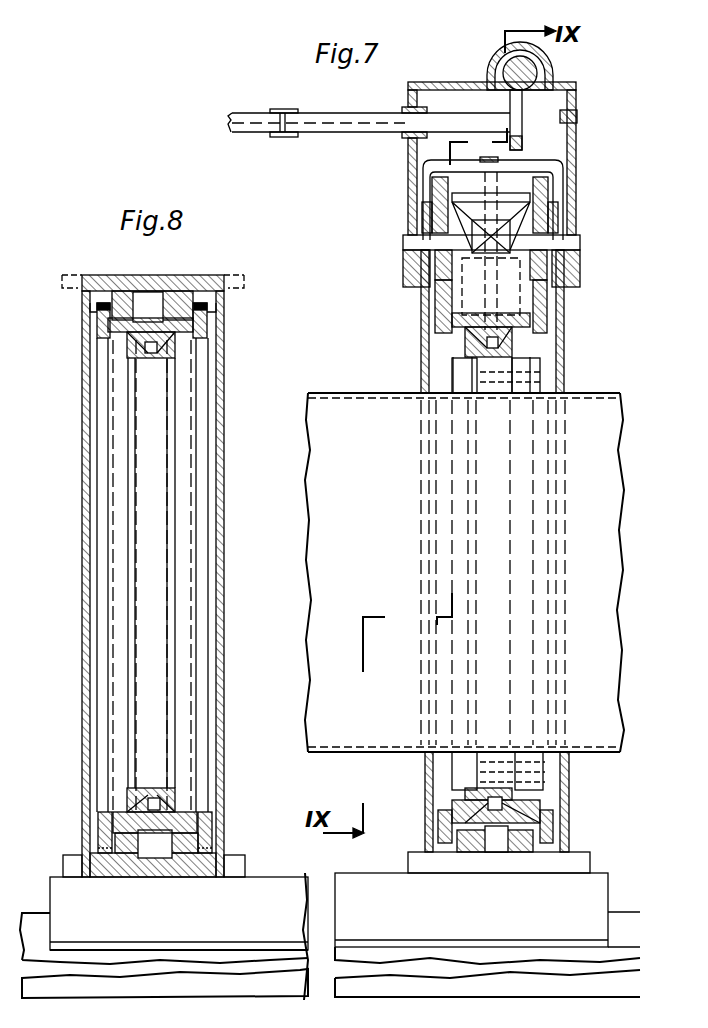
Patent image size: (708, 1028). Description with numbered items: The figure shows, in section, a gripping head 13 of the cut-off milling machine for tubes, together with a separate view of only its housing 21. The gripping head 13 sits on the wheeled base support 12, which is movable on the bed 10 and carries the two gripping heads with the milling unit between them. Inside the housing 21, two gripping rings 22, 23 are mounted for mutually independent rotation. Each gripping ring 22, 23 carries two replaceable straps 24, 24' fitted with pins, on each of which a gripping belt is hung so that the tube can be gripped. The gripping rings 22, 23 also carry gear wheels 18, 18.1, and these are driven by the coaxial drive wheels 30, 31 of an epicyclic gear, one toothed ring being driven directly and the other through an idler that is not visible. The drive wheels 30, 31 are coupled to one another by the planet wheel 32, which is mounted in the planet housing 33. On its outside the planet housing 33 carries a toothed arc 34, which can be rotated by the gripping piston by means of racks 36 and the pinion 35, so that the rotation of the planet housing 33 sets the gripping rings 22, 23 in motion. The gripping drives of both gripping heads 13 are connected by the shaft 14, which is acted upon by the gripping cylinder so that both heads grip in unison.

In FIG. 8, the bed 10 is at (38, 926).
In FIG. 8, the wheeled base support 12 is at (262, 898).
In FIG. 7, the gripping head 13 is at (398, 242).
In FIG. 7, the shaft 14 is at (338, 128).
In FIG. 8, the gear wheel 18 is at (100, 322).
In FIG. 7, the gear wheel 18 is at (445, 314).
In FIG. 8, the gear wheel 18.1 is at (200, 318).
In FIG. 7, the gear wheel 18.1 is at (532, 314).
In FIG. 8, the housing 21 is at (187, 277).
In FIG. 8, the gripping ring 22 is at (125, 350).
In FIG. 7, the gripping ring 22 is at (455, 345).
In FIG. 8, the gripping ring 23 is at (180, 353).
In FIG. 7, the gripping ring 23 is at (517, 350).
In FIG. 7, the strap 24 is at (426, 605).
In FIG. 7, the strap 24' is at (548, 605).
In FIG. 7, the drive wheel 30 is at (455, 218).
In FIG. 7, the drive wheel 31 is at (565, 258).
In FIG. 7, the planet wheel 32 is at (523, 207).
In FIG. 7, the planet housing 33 is at (557, 174).
In FIG. 7, the toothed arc 34 is at (530, 155).
In FIG. 7, the pinion 35 is at (522, 99).
In FIG. 7, the rack 36 is at (530, 66).